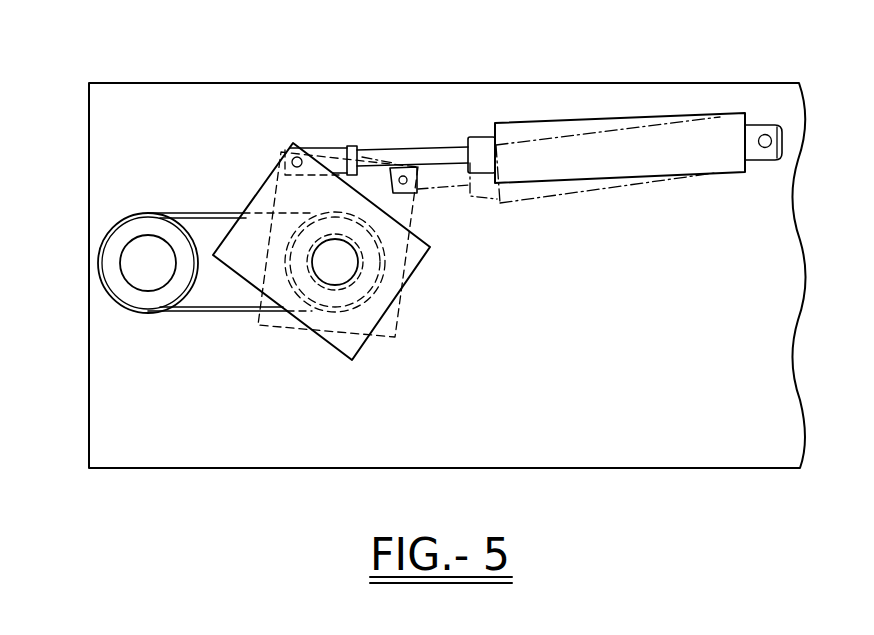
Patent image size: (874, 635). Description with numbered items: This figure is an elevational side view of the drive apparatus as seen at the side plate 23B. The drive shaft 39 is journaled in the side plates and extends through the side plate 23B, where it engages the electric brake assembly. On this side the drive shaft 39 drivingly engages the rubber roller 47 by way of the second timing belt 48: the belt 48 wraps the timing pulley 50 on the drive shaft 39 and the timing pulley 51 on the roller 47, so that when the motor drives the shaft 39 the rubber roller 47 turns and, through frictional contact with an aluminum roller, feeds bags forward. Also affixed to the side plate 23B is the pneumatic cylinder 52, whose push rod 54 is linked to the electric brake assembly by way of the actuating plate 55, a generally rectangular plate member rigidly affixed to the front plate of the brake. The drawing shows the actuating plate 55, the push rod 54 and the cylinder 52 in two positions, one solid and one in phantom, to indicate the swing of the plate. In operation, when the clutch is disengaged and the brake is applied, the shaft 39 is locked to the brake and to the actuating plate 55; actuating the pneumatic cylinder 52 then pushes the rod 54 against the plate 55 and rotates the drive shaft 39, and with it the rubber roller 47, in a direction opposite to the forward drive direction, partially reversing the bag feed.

The side plate 23B is at (370, 82).
The drive shaft 39 is at (353, 277).
The rubber roller 47 is at (132, 266).
The second timing belt 48 is at (197, 212).
The timing pulley 50 is at (360, 298).
The timing pulley 51 is at (122, 234).
The pneumatic cylinder 52 is at (577, 121).
The push rod 54 is at (338, 147).
The actuating plate 55 is at (268, 178).